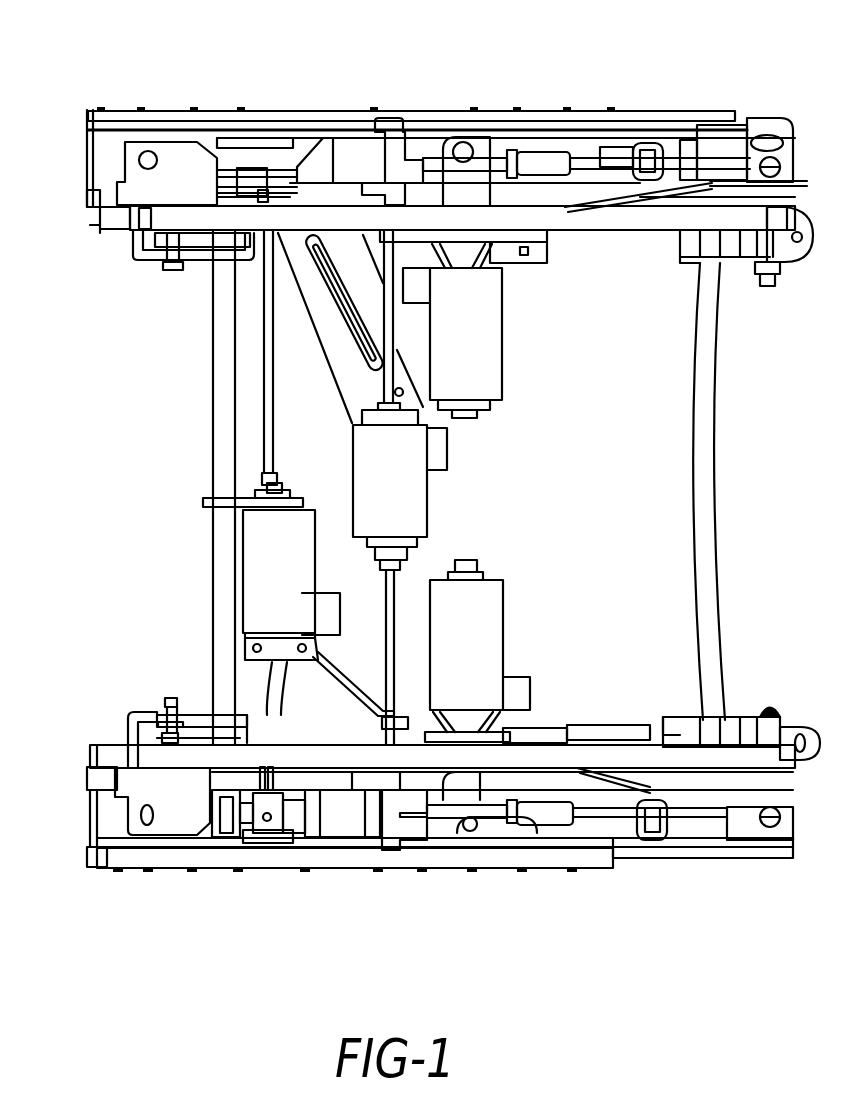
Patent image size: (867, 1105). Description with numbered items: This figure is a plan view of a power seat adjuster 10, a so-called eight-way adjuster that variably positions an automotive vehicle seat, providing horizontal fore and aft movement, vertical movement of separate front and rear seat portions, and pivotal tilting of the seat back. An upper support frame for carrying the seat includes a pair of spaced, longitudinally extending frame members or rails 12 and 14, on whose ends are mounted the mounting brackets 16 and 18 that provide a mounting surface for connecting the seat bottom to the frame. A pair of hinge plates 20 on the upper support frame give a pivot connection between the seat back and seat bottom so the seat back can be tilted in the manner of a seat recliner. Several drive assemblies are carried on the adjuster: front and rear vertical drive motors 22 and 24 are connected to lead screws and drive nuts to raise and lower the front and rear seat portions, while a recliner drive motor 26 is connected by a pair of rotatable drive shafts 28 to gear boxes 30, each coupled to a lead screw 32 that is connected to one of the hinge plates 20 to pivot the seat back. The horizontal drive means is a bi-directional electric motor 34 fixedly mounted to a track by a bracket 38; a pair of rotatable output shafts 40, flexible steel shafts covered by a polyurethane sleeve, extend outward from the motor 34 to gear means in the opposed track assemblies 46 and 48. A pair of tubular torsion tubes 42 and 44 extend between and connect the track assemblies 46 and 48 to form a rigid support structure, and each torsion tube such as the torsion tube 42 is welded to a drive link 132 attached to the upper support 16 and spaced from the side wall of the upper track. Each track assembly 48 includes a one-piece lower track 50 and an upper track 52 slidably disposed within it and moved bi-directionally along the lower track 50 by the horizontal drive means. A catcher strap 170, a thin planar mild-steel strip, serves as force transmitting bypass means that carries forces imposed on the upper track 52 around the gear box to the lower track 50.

The power seat adjuster 10 is at (417, 20).
The frame member 12 is at (390, 117).
The frame member 14 is at (331, 773).
The mounting bracket 16 is at (140, 190).
The mounting bracket 18 is at (140, 788).
The hinge plate 20 is at (743, 114).
The front vertical drive motor 22 is at (472, 346).
The rear vertical drive motor 24 is at (488, 614).
The recliner drive motor 26 is at (417, 509).
The drive shaft 28 is at (390, 358).
The gear box 30 is at (362, 208).
The lead screw 32 is at (620, 160).
The bi-directional electric motor 34 is at (253, 533).
The bracket 38 is at (345, 684).
The output shaft 40 is at (268, 370).
The torsion tube 42 is at (220, 570).
The torsion tube 44 is at (703, 466).
The track assembly 46 is at (191, 103).
The track assembly 48 is at (120, 879).
The lower track 50 is at (98, 104).
The upper track 52 is at (108, 162).
The drive link 132 is at (203, 252).
The catcher strap 170 is at (254, 164).